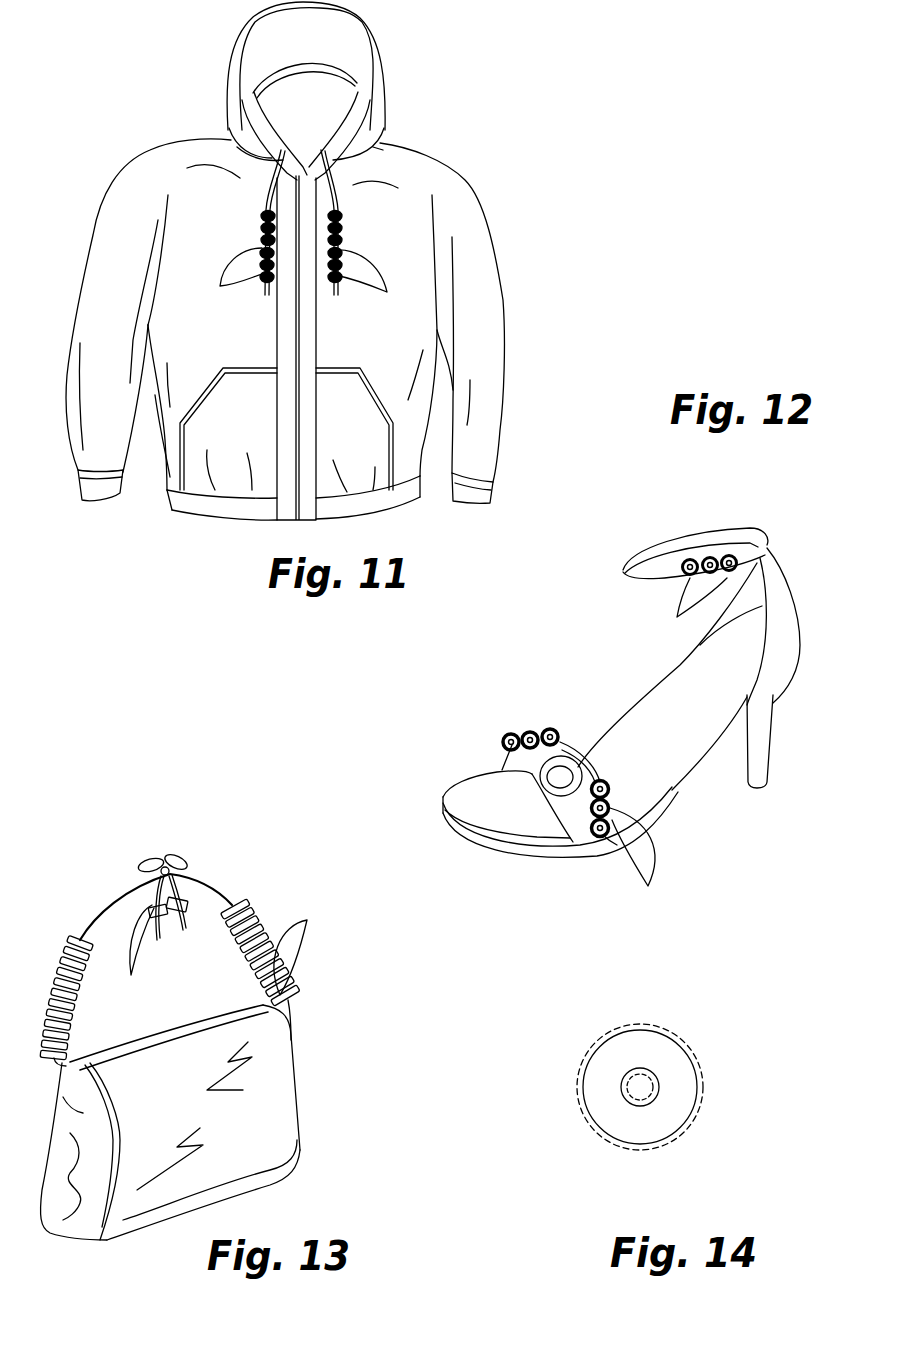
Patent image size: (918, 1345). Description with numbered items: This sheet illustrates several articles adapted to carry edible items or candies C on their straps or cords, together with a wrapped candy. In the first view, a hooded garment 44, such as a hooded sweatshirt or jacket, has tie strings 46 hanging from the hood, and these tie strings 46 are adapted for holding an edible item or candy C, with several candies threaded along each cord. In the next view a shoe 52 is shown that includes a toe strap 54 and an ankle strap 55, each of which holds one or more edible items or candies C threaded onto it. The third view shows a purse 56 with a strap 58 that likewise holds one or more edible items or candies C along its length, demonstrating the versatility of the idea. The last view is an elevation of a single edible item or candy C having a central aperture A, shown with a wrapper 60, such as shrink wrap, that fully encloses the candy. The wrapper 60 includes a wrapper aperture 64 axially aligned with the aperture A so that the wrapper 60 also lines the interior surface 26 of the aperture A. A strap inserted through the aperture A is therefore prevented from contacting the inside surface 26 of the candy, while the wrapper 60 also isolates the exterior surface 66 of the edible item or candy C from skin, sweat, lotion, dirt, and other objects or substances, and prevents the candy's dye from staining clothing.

In FIG. 11, the hooded garment 44 is at (410, 131).
In FIG. 11, the tie strings 46 is at (262, 198).
In FIG. 11, the edible item or candy C is at (306, 288).
In FIG. 12, the edible item or candy C is at (668, 748).
In FIG. 13, the edible item or candy C is at (227, 958).
In FIG. 14, the edible item or candy C is at (674, 1022).
In FIG. 12, the shoe 52 is at (609, 678).
In FIG. 12, the toe strap 54 is at (587, 763).
In FIG. 12, the ankle strap 55 is at (653, 545).
In FIG. 13, the purse 56 is at (248, 888).
In FIG. 13, the strap 58 is at (120, 897).
In FIG. 14, the interior surface of the aperture 26 is at (637, 1068).
In FIG. 14, the exterior surface 66 is at (584, 1078).
In FIG. 14, the wrapper 60 is at (707, 1070).
In FIG. 14, the aperture A is at (658, 1103).
In FIG. 14, the wrapper aperture 64 is at (625, 1090).